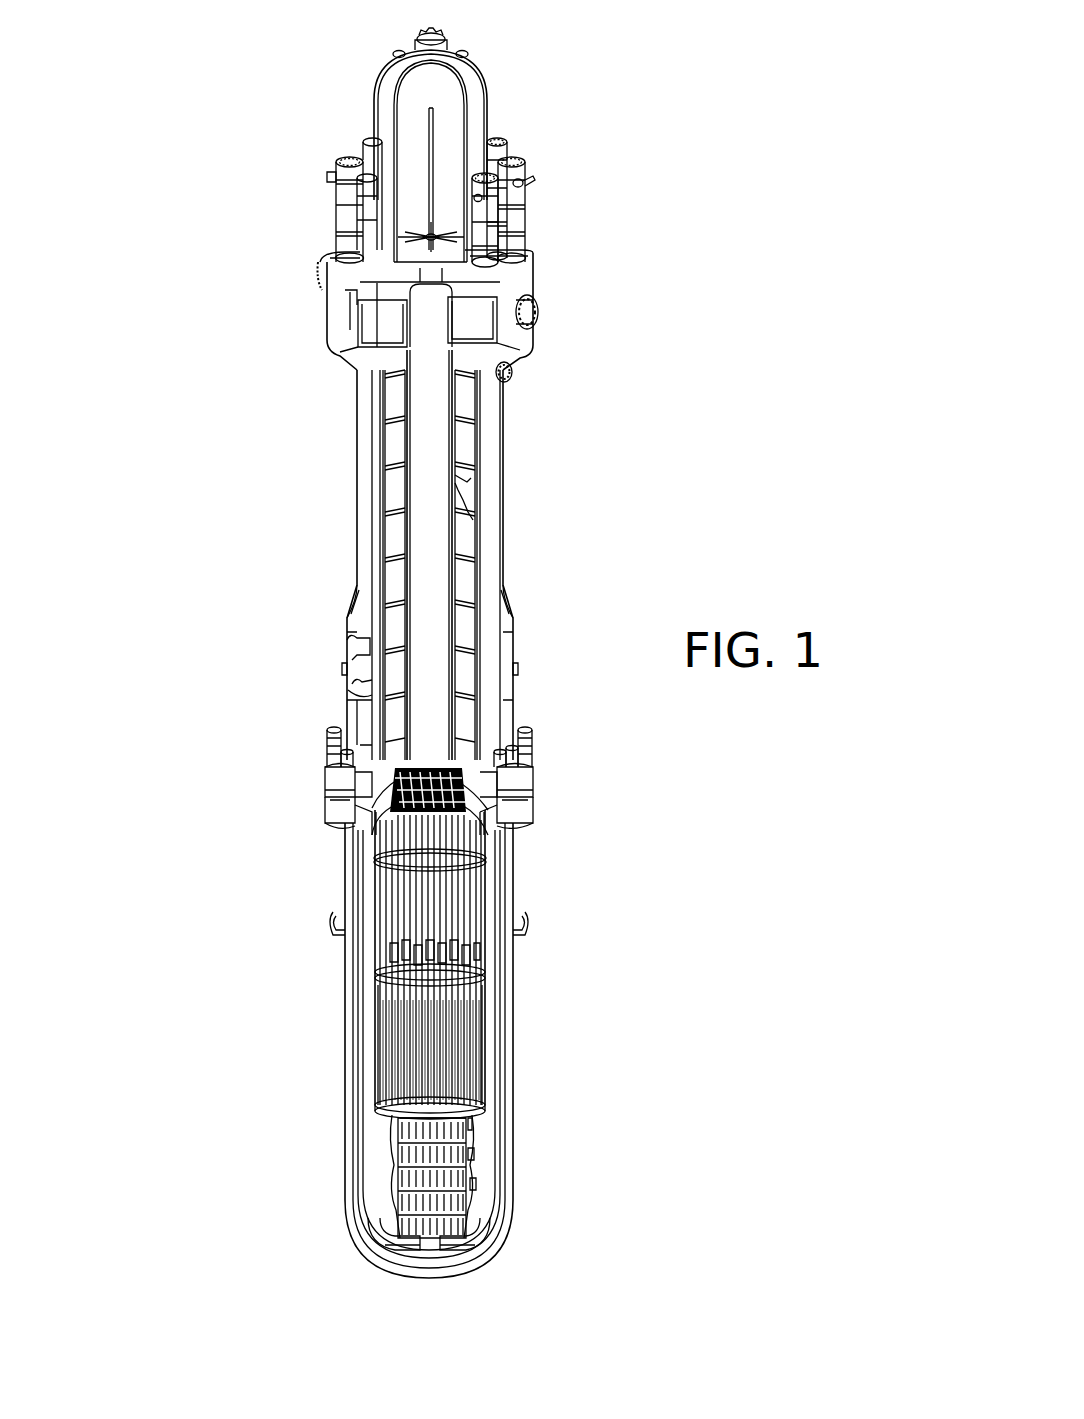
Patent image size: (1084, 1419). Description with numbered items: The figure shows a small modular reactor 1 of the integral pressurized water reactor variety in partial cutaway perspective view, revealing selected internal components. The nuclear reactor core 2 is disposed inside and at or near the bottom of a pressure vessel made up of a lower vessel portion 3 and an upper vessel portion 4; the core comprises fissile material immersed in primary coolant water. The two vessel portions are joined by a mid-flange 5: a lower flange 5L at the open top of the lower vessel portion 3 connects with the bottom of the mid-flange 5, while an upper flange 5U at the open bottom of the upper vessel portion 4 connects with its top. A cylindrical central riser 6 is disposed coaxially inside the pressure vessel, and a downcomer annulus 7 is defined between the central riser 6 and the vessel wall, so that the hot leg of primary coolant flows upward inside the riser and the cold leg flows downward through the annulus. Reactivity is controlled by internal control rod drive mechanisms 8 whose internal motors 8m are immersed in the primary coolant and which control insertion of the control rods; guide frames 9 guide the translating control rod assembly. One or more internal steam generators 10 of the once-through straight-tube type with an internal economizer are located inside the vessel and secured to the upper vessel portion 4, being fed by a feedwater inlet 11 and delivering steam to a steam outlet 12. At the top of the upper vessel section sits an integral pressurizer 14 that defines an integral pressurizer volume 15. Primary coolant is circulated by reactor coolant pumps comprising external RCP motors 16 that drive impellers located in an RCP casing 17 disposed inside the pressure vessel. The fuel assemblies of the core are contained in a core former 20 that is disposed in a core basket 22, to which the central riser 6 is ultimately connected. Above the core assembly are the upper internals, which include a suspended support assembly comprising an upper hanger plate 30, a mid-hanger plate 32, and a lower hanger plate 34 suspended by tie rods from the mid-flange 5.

The small modular reactor 1 is at (672, 487).
The nuclear reactor core 2 is at (420, 1176).
The lower vessel portion 3 is at (507, 1072).
The upper vessel portion 4 is at (490, 482).
The mid-flange 5 is at (533, 797).
The upper flange 5U is at (533, 767).
The lower flange 5L is at (530, 808).
The central riser 6 is at (443, 428).
The downcomer annulus 7 is at (473, 520).
The internal control rod drive mechanisms 8 is at (438, 903).
The internal motors 8m is at (413, 955).
The guide frames 9 is at (417, 1028).
The internal steam generator 10 is at (393, 450).
The feedwater inlet 11 is at (350, 693).
The steam outlet 12 is at (357, 650).
The integral pressurizer 14 is at (483, 100).
The integral pressurizer volume 15 is at (416, 108).
The external RCP motors 16 is at (527, 177).
The RCP casing 17 is at (357, 298).
The core former 20 is at (477, 1178).
The core basket 22 is at (490, 1213).
The upper hanger plate 30 is at (407, 862).
The mid-hanger plate 32 is at (482, 967).
The lower hanger plate 34 is at (417, 1113).